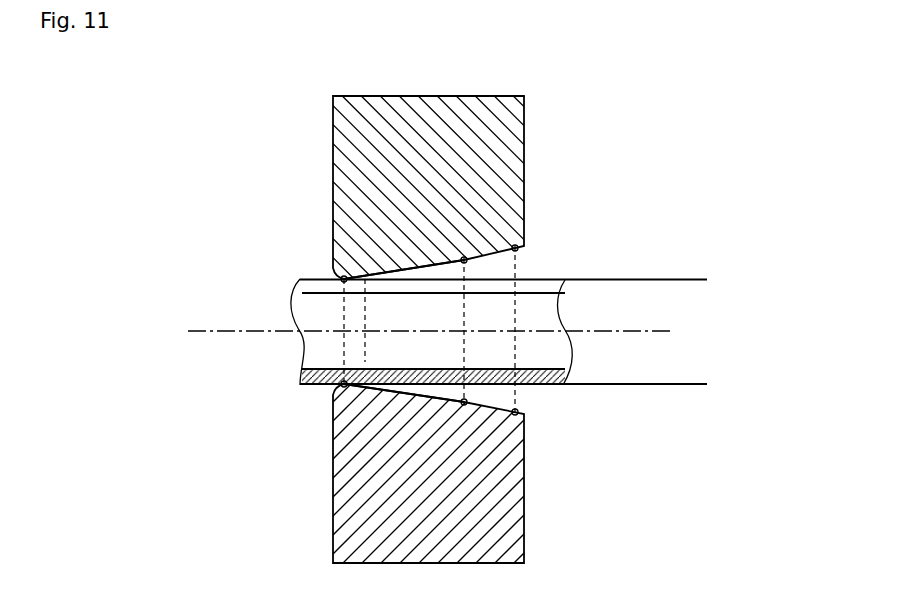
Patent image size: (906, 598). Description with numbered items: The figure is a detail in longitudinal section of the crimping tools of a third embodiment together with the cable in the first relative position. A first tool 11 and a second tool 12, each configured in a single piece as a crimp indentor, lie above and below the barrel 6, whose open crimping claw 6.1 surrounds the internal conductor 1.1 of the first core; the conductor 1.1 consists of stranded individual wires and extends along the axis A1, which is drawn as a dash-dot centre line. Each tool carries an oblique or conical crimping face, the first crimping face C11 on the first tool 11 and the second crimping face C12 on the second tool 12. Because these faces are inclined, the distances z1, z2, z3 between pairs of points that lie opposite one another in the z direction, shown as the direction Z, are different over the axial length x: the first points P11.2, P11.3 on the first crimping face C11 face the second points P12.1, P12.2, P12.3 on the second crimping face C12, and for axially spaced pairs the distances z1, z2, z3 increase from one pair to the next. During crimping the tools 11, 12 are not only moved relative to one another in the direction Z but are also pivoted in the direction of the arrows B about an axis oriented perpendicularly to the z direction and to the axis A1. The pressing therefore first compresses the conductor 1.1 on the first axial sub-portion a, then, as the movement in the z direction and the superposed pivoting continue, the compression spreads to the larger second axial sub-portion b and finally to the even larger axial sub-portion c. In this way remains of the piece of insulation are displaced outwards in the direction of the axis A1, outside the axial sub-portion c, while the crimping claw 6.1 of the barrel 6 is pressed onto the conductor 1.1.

The first tool 11 is at (314, 150).
The second tool 12 is at (314, 493).
The barrel 6 is at (566, 372).
The crimping claw 6.1 is at (303, 284).
The internal conductor 1.1 is at (554, 314).
The axis A1 is at (192, 331).
The first point P11.2 is at (464, 257).
The first point P11.3 is at (518, 247).
The second point P12.1 is at (341, 277).
The second point P12.2 is at (464, 405).
The second point P12.3 is at (518, 412).
The crimping face C11 is at (416, 262).
The crimping face C12 is at (416, 394).
The first axial sub-portion a is at (318, 323).
The second axial sub-portion b is at (464, 336).
The axial sub-portion c is at (515, 359).
The axial length x is at (283, 208).
The z direction Z is at (592, 85).
The distance z1 is at (701, 280).
The distance z2 is at (464, 260).
The distance z3 is at (515, 248).
The pivoting direction B is at (618, 82).